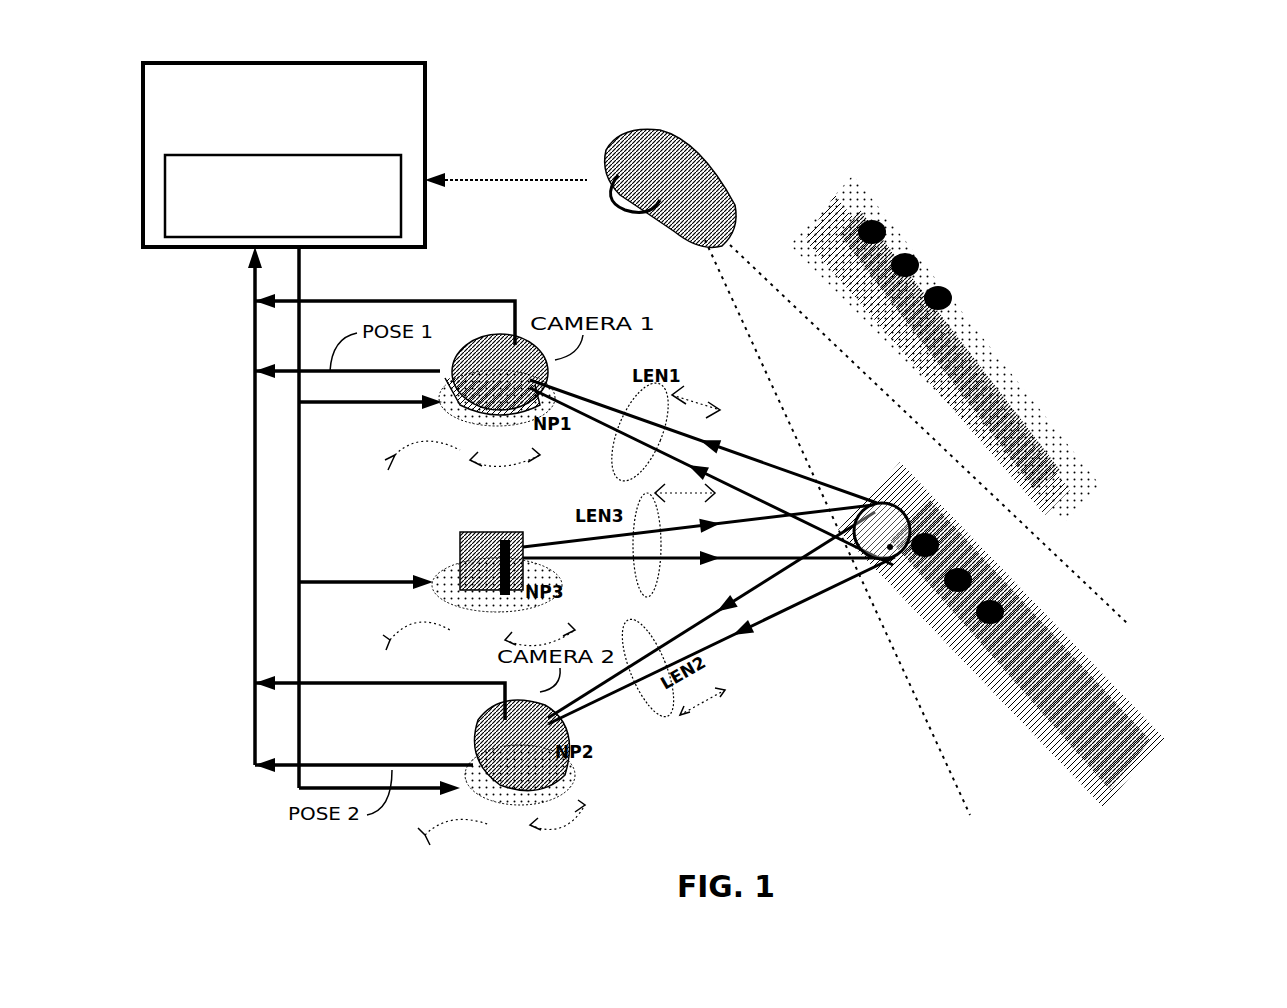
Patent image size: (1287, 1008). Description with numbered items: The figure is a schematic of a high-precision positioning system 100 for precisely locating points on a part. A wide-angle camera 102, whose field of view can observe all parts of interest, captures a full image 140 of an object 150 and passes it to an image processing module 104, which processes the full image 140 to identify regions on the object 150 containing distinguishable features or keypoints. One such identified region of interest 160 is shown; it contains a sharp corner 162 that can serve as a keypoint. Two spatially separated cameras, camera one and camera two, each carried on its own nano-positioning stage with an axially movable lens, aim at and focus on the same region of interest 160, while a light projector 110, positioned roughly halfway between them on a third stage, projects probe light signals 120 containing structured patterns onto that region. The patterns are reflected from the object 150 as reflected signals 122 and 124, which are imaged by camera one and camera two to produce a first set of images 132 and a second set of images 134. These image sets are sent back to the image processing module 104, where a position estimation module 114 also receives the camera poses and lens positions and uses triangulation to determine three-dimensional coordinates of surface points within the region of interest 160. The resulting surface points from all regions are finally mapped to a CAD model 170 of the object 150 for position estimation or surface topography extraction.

The high-precision positioning system 100 is at (1018, 51).
The image processing module 104 is at (284, 155).
The position estimation module 114 is at (283, 196).
The full image 140 is at (455, 180).
The wide-angle camera 102 is at (615, 178).
The first set of images 132 is at (357, 301).
The light projector 110 is at (462, 578).
The second set of images 134 is at (340, 686).
The reflected signals 122 is at (760, 462).
The probe light signals 120 is at (775, 517).
The reflected signals 124 is at (785, 584).
The CAD model 170 is at (855, 173).
The object 150 is at (1165, 737).
The region of interest 160 is at (897, 513).
The sharp corner 162 is at (890, 547).